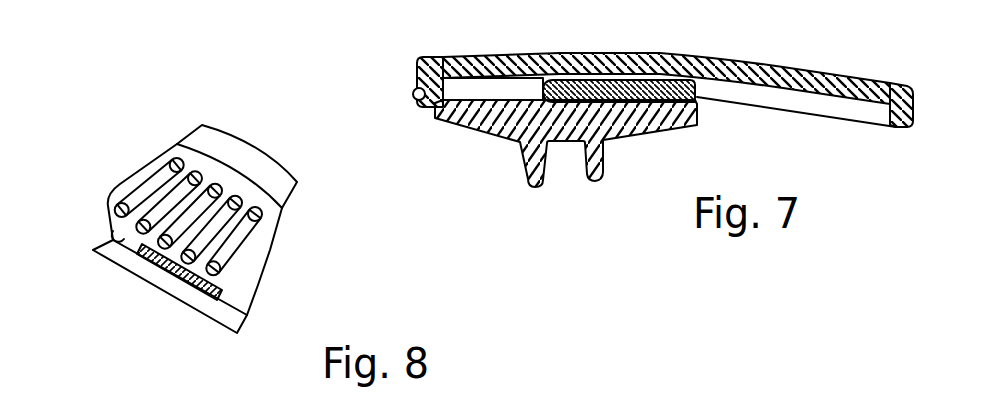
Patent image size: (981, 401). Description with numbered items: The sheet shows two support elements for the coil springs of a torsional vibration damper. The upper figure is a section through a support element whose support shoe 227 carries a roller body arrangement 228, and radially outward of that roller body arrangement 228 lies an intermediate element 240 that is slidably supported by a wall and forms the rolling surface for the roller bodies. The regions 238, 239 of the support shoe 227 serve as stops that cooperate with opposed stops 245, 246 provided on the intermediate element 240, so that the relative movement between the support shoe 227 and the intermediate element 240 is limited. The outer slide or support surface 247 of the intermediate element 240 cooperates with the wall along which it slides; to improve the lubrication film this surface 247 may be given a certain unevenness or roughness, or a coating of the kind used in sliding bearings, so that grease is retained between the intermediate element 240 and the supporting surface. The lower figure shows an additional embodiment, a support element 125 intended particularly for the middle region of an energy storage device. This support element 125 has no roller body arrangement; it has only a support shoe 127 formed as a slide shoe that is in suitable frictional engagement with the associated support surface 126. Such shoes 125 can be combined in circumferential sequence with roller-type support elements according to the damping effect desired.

In FIG. 8, the support element 125 is at (178, 254).
In FIG. 8, the support surface 126 is at (126, 237).
In FIG. 8, the support shoe 127 is at (202, 288).
In FIG. 7, the support shoe 227 is at (480, 126).
In FIG. 7, the roller body arrangement 228 is at (658, 53).
In FIG. 7, the stop region 238 is at (450, 57).
In FIG. 7, the stop region 239 is at (706, 97).
In FIG. 7, the intermediate element 240 is at (863, 85).
In FIG. 7, the opposed stop 245 is at (416, 99).
In FIG. 7, the opposed stop 246 is at (902, 124).
In FIG. 7, the slide or support surface 247 is at (780, 62).